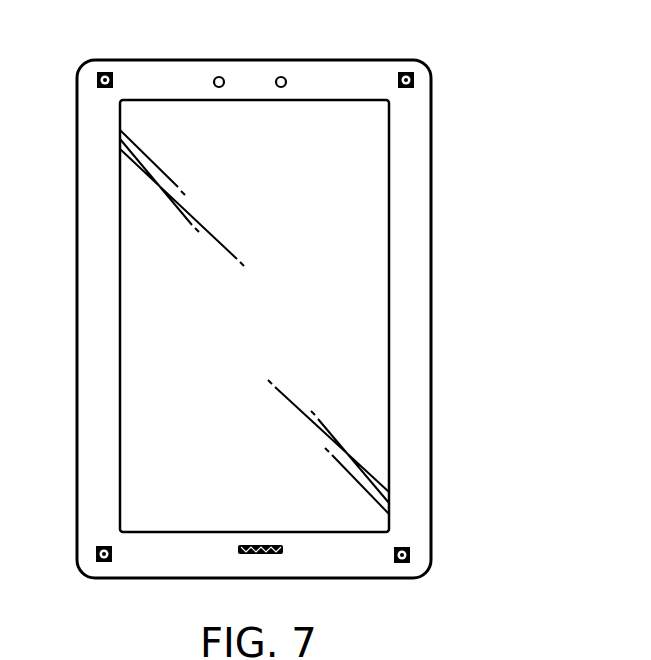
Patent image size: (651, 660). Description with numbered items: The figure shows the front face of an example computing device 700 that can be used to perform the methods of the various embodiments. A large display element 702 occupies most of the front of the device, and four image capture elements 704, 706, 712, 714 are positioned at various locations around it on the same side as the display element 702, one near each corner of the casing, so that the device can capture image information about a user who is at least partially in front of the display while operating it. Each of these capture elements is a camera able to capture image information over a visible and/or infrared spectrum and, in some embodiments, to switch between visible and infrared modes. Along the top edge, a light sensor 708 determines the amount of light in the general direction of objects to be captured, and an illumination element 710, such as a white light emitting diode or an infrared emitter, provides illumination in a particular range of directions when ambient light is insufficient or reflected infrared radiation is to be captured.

The computing device 700 is at (585, 118).
The display element 702 is at (118, 110).
The image capture element 704 is at (103, 73).
The image capture element 706 is at (410, 72).
The light sensor 708 is at (285, 78).
The illumination element 710 is at (215, 78).
The image capture element 712 is at (103, 563).
The image capture element 714 is at (403, 565).